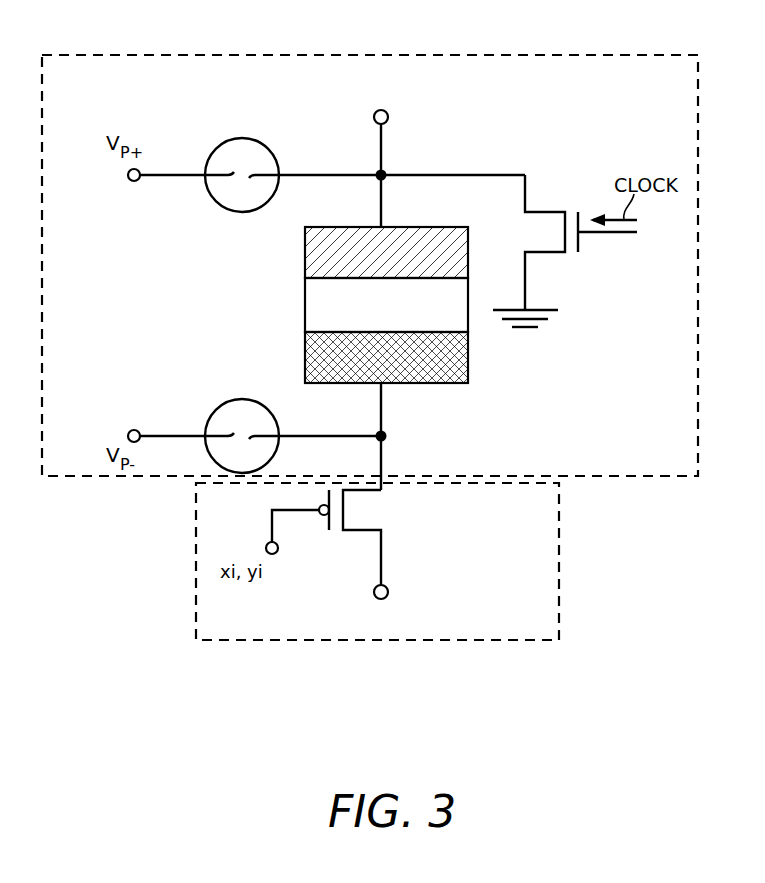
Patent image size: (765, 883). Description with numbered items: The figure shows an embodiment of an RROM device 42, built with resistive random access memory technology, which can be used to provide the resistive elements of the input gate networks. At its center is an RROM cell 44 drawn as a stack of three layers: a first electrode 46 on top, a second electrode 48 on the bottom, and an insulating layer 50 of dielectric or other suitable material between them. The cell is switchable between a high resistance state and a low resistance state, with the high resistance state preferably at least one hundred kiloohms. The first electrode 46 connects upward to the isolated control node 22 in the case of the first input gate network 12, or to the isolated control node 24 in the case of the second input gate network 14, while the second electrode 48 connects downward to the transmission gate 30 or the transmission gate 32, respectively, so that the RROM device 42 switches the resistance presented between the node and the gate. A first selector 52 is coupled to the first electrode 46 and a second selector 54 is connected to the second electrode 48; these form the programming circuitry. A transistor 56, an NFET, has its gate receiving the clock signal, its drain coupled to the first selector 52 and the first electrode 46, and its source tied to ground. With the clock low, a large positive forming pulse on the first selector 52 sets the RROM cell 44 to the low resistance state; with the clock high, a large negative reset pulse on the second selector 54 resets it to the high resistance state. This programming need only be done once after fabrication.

The RROM device 42 is at (545, 56).
The isolated control node 22 is at (384, 121).
The isolated control node 24 is at (381, 109).
The first selector 52 is at (240, 138).
The second selector 54 is at (218, 405).
The transistor 56 is at (541, 212).
The RROM cell 44 is at (407, 321).
The first electrode 46 is at (305, 253).
The insulating layer 50 is at (305, 305).
The second electrode 48 is at (305, 358).
The transmission gate 30 is at (362, 544).
The transmission gate 32 is at (375, 490).
The first input gate network 12 is at (402, 582).
The second input gate network 14 is at (533, 641).